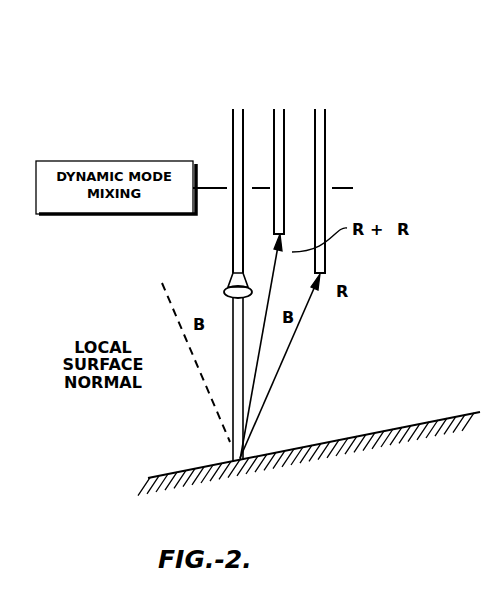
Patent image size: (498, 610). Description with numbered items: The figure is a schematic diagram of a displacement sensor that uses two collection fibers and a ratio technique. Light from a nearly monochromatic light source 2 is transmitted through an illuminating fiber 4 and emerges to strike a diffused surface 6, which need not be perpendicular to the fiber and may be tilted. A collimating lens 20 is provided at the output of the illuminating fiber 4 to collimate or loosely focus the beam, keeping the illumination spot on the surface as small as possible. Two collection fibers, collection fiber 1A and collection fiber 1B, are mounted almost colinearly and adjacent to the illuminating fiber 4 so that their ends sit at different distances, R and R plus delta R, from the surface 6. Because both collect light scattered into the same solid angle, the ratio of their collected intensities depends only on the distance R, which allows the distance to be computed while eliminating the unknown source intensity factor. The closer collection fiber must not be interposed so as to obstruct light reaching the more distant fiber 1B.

The light source 2 is at (238, 102).
The illuminating fiber 4 is at (223, 191).
The collimating lens 20 is at (224, 363).
The collection fiber A 1A is at (321, 102).
The collection fiber B 1B is at (279, 102).
The diffused surface 6 is at (309, 454).